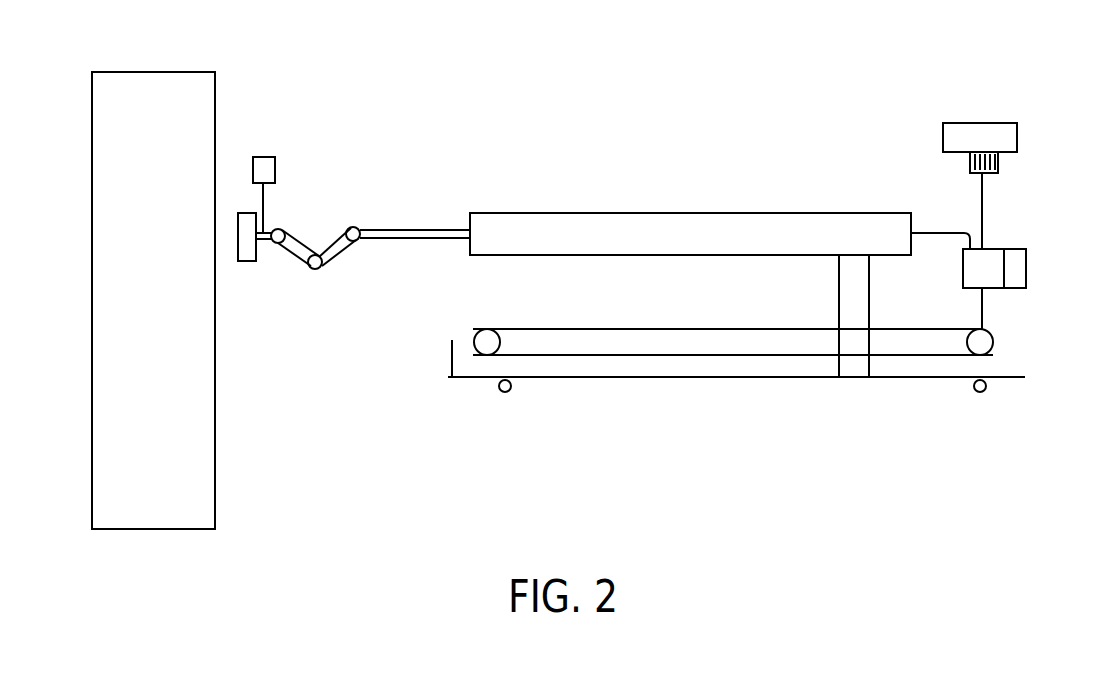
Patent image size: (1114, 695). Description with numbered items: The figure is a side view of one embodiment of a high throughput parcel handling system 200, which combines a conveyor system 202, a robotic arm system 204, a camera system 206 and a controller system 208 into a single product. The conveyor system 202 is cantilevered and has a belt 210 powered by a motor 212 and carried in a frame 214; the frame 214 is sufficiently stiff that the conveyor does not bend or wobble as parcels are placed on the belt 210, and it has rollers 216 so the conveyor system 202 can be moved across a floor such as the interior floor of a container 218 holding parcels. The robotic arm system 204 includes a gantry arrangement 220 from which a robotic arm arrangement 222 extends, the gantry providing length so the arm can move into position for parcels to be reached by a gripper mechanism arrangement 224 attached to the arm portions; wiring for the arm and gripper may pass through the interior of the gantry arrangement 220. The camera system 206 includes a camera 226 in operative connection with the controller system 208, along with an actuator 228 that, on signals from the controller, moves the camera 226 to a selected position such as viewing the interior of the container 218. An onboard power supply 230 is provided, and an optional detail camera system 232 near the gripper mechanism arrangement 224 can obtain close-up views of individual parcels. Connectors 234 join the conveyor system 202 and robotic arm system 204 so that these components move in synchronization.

The high throughput parcel handling system 200 is at (395, 102).
The conveyor system 202 is at (420, 355).
The robotic arm system 204 is at (540, 200).
The camera system 206 is at (1019, 137).
The controller system 208 is at (990, 258).
The belt 210 is at (536, 329).
The motor 212 is at (993, 343).
The frame 214 is at (448, 377).
The rollers 216 is at (511, 388).
The container 218 is at (163, 72).
The gantry arrangement 220 is at (660, 213).
The robotic arm arrangement 222 is at (316, 255).
The gripper mechanism arrangement 224 is at (247, 261).
The camera 226 is at (978, 123).
The actuator 228 is at (999, 165).
The onboard power supply 230 is at (1018, 268).
The detail camera system 232 is at (261, 157).
The connectors 234 is at (837, 287).